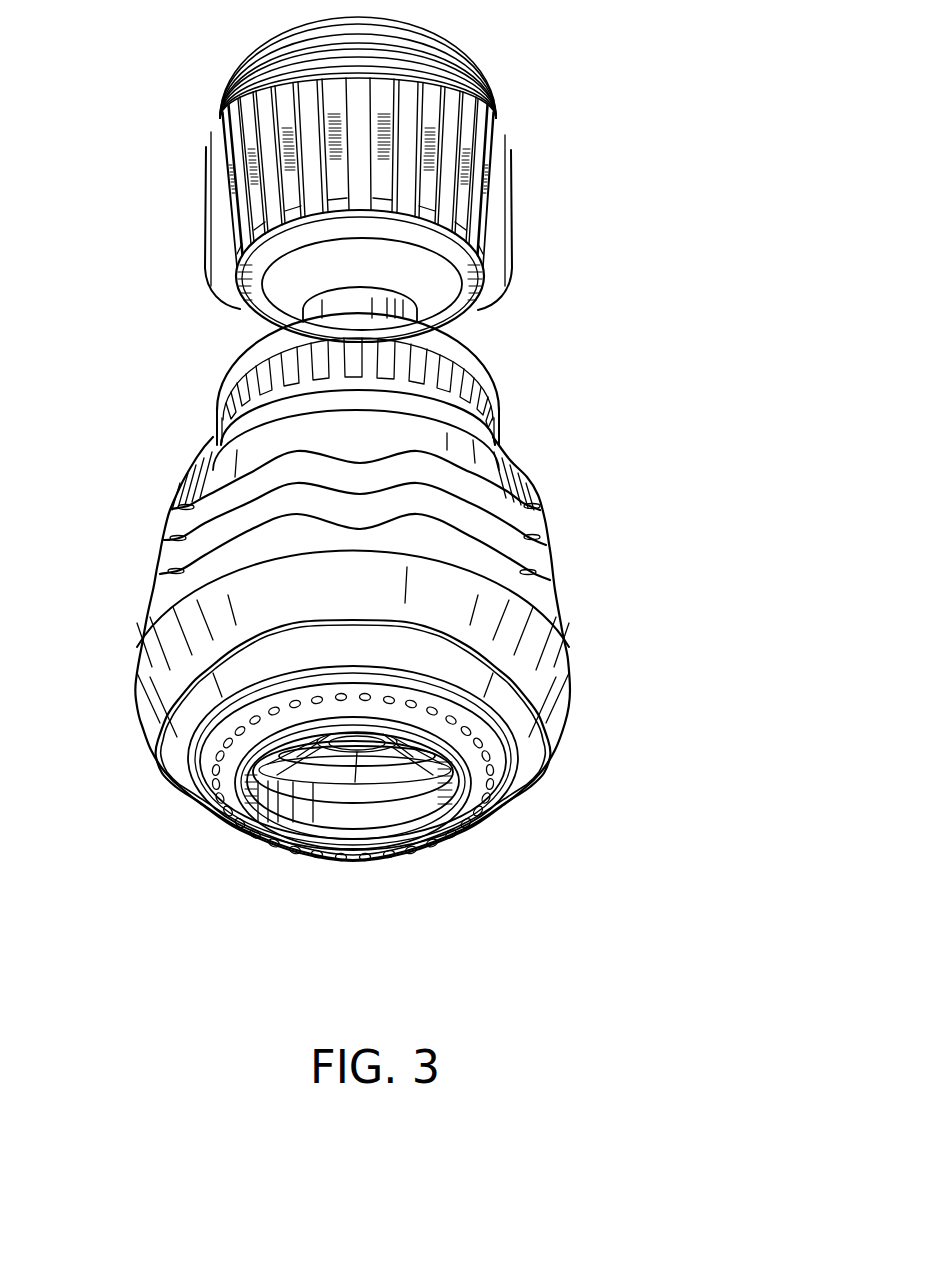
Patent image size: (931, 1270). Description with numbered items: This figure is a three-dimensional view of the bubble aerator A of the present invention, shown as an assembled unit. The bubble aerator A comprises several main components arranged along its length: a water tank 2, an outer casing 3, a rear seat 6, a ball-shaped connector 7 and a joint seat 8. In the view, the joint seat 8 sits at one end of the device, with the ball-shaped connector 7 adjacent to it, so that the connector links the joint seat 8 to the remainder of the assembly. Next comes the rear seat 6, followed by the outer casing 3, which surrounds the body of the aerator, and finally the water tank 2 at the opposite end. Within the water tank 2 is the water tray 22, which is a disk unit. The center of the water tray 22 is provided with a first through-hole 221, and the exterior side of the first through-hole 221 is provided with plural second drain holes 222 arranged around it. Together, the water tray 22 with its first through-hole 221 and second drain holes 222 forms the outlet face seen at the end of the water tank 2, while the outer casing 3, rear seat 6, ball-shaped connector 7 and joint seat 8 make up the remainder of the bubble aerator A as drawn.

The bubble aerator A is at (636, 397).
The joint seat 8 is at (514, 211).
The ball-shaped connector 7 is at (416, 293).
The rear seat 6 is at (222, 402).
The outer casing 3 is at (533, 553).
The water tank 2 is at (516, 703).
The water tray 22 is at (352, 738).
The first through-hole 221 is at (357, 738).
The second drain holes 222 is at (240, 828).